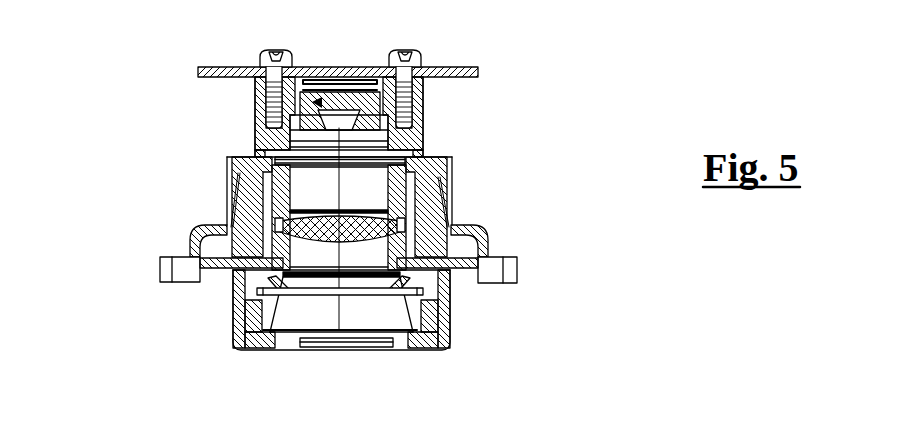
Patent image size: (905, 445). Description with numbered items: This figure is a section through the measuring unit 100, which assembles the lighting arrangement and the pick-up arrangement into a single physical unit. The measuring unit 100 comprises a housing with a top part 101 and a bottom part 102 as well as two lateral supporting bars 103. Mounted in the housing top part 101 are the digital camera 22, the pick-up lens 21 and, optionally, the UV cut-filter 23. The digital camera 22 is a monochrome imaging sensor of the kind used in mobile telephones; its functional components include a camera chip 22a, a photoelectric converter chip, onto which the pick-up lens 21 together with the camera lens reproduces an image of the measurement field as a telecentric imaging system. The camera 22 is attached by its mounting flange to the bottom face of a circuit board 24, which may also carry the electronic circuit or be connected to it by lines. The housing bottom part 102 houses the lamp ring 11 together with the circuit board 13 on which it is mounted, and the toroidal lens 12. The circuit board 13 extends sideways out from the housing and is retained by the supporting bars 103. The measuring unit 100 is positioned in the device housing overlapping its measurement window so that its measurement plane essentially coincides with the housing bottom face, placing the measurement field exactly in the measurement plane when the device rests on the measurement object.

The measuring unit 100 is at (150, 156).
The circuit board 24 is at (212, 68).
The digital camera 22 is at (258, 110).
The camera chip 22a is at (332, 82).
The UV cut-filter 23 is at (422, 147).
The housing top part 101 is at (450, 195).
The pick-up lens 21 is at (322, 248).
The circuit board 13 is at (217, 270).
The supporting bars 103 is at (517, 263).
The housing bottom part 102 is at (230, 335).
The lamp ring 11 is at (430, 278).
The toroidal lens 12 is at (404, 283).